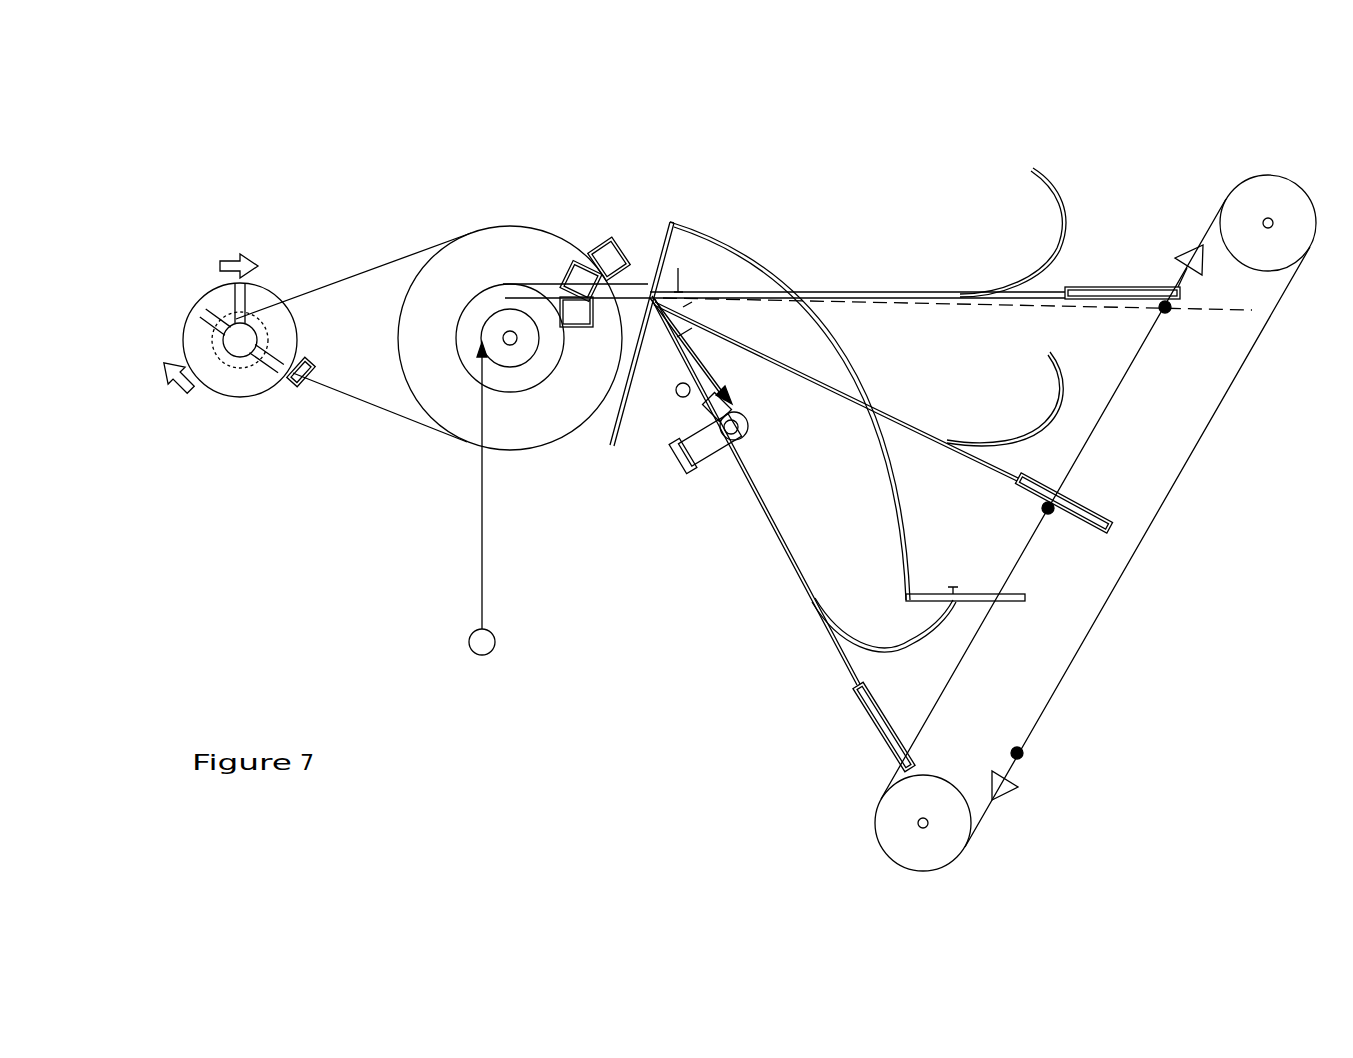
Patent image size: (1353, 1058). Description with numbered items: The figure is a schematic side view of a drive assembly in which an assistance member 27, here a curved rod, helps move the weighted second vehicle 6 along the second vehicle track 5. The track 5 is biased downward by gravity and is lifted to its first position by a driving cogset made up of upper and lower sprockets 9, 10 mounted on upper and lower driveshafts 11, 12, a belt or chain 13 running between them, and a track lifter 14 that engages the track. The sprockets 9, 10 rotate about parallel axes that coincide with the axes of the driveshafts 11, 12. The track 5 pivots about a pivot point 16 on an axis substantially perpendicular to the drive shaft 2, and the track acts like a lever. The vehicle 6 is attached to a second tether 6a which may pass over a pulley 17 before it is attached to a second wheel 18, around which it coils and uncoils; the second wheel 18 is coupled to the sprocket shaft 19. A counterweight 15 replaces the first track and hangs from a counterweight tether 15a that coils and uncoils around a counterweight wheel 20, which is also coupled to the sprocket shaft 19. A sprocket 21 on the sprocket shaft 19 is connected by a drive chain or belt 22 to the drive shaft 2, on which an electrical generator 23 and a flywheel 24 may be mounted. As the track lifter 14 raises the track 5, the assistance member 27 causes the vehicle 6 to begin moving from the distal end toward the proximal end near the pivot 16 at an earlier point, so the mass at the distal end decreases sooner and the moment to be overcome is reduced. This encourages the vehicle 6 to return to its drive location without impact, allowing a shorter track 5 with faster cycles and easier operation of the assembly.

The drive shaft 2 is at (224, 330).
The second vehicle track 5 is at (1022, 300).
The second vehicle 6 is at (705, 475).
The second tether 6a is at (724, 352).
The upper sprocket 9 is at (878, 838).
The lower sprocket 10 is at (1254, 178).
The upper driveshaft 11 is at (929, 828).
The lower driveshaft 12 is at (1274, 220).
The belt or chain 13 is at (1156, 515).
The track lifter 14 is at (1166, 315).
The counterweight 15 is at (481, 656).
The counterweight tether 15a is at (481, 548).
The pivot point 16 is at (647, 340).
The pulley 17 is at (645, 292).
The second wheel 18 is at (545, 400).
The sprocket shaft 19 is at (505, 330).
The counterweight wheel 20 is at (488, 352).
The sprocket 21 is at (525, 228).
The drive chain or belt 22 is at (365, 404).
The electrical generator 23 is at (215, 298).
The flywheel 24 is at (262, 300).
The assistance member 27 is at (778, 278).